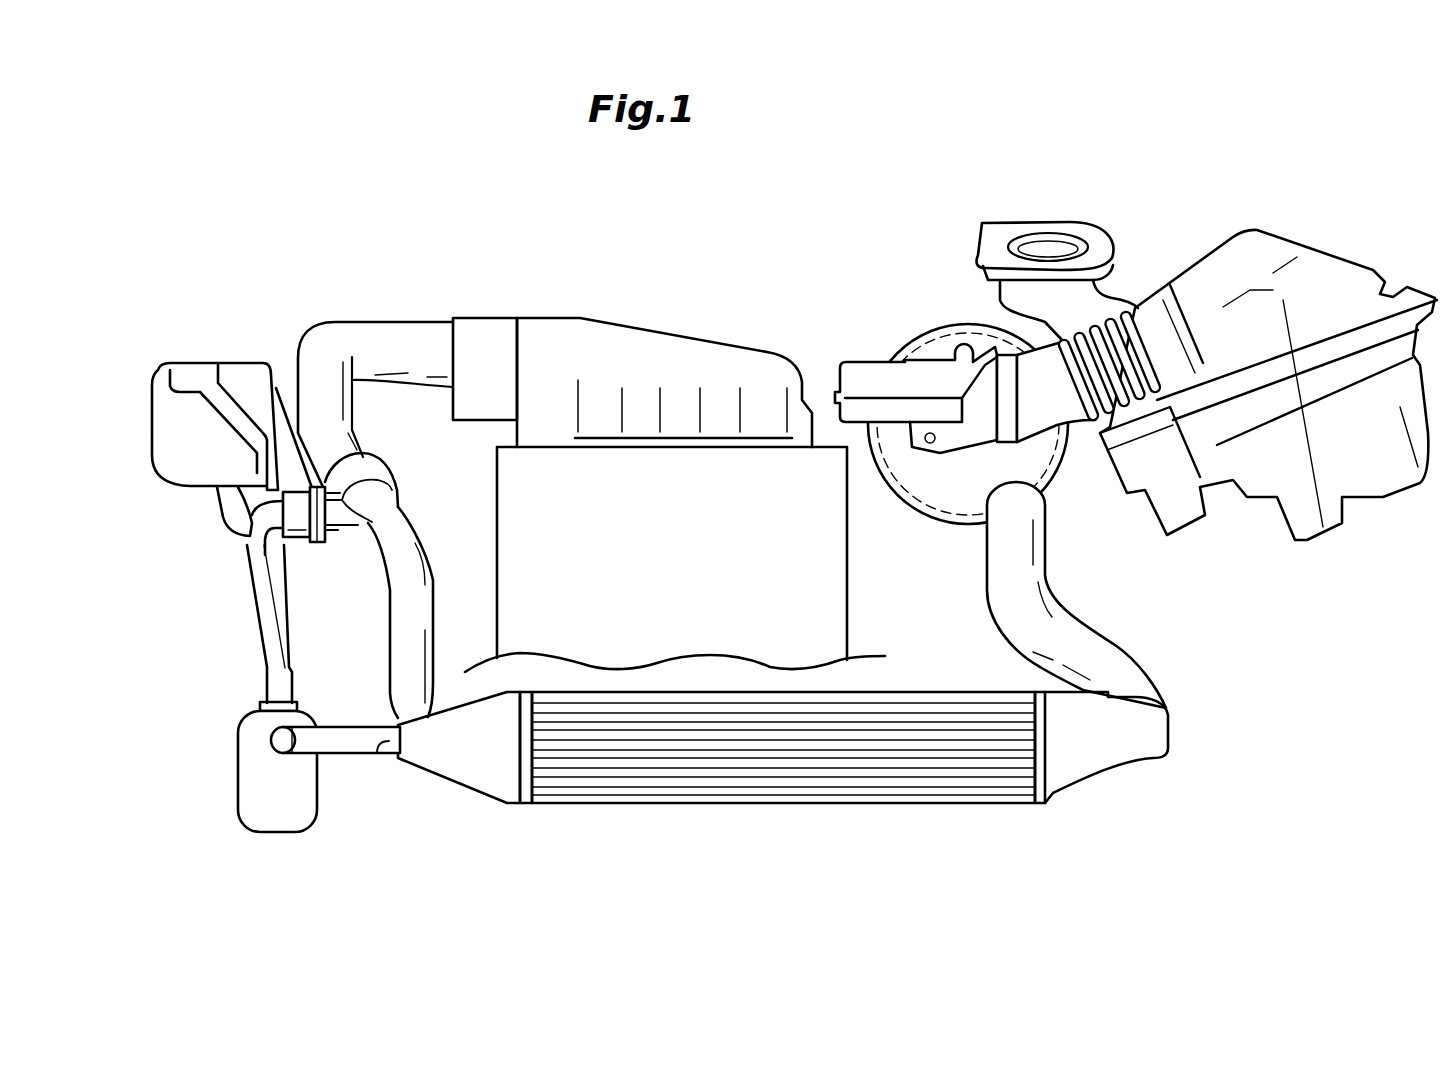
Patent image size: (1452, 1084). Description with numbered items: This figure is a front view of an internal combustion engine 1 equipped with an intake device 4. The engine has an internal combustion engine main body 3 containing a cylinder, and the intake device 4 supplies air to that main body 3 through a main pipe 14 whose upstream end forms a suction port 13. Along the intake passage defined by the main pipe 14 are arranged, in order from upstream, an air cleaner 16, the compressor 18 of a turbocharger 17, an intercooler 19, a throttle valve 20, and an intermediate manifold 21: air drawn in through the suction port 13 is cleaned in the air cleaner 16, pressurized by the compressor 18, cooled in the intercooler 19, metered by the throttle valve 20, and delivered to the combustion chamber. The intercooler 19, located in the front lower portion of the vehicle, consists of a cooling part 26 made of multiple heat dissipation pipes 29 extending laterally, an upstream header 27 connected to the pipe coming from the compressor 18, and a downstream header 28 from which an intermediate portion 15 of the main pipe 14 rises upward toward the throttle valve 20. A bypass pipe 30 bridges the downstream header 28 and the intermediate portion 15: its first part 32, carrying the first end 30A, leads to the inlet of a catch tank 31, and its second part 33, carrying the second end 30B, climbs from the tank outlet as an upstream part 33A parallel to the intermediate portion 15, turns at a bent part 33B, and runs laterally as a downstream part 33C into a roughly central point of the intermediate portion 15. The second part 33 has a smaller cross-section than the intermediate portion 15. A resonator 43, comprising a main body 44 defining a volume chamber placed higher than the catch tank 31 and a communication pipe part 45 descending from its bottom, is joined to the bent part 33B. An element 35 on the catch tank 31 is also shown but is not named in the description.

The internal combustion engine 1 is at (794, 195).
The internal combustion engine main body 3 is at (503, 546).
The intake device 4 is at (867, 858).
The suction port 13 is at (1047, 248).
The main pipe 14 is at (1117, 607).
The intermediate portion 15 is at (419, 591).
The air cleaner 16 is at (1332, 268).
The turbocharger 17 is at (1052, 478).
The compressor 18 is at (932, 340).
The intercooler 19 is at (672, 805).
The throttle valve 20 is at (483, 338).
The intermediate manifold 21 is at (672, 348).
The cooling part 26 is at (1013, 804).
The upstream header 27 is at (1110, 757).
The downstream header 28 is at (478, 772).
The heat dissipation pipes 29 is at (804, 790).
The bypass pipe 30 is at (152, 651).
The first end 30A is at (380, 752).
The second end 30B is at (357, 478).
The catch tank 31 is at (232, 736).
The first part 32 is at (352, 757).
The second part 33 is at (232, 587).
The upstream part 33A is at (258, 622).
The bent part 33B is at (268, 537).
The downstream part 33C is at (345, 540).
The separator 35 is at (252, 797).
The resonator 43 is at (208, 343).
The main body 44 is at (158, 432).
The communication pipe part 45 is at (230, 506).